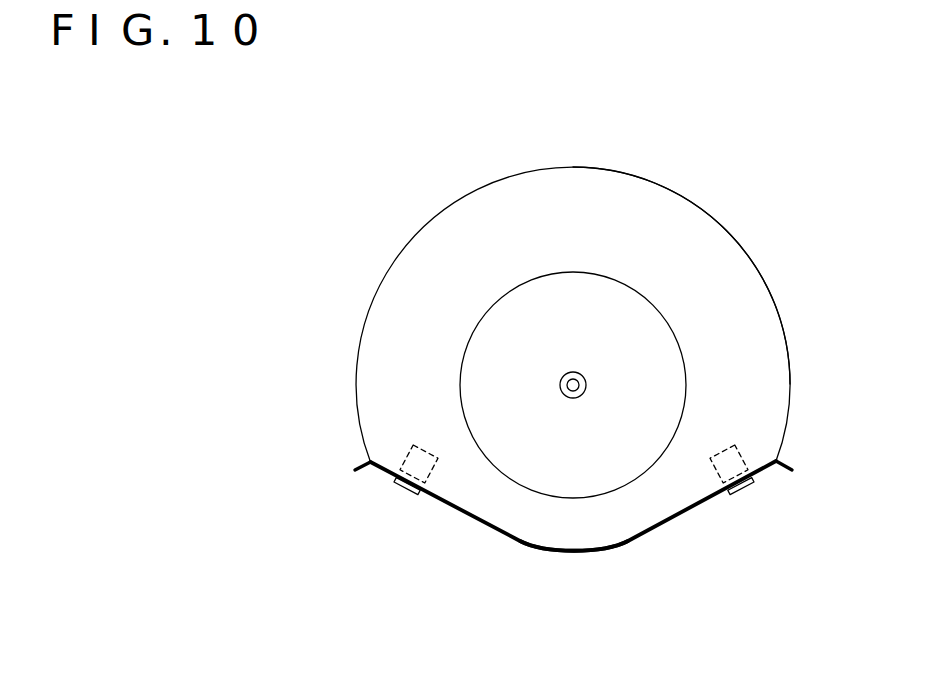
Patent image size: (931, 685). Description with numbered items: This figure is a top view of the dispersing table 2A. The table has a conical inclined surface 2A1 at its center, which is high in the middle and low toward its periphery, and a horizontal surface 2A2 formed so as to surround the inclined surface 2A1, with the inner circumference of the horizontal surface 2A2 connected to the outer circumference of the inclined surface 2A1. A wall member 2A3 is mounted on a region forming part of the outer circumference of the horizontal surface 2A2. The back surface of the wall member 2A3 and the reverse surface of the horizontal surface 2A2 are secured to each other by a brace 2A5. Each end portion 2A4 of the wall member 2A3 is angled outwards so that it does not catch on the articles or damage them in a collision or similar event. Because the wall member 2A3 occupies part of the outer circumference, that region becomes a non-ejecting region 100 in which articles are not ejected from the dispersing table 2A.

The dispersing table 2A is at (407, 155).
The conical inclined surface 2A1 is at (573, 325).
The horizontal surface 2A2 is at (702, 242).
The wall member 2A3 is at (572, 553).
The end portion 2A4 is at (348, 472).
The brace 2A5 is at (405, 482).
The non-ejecting region 100 is at (540, 518).